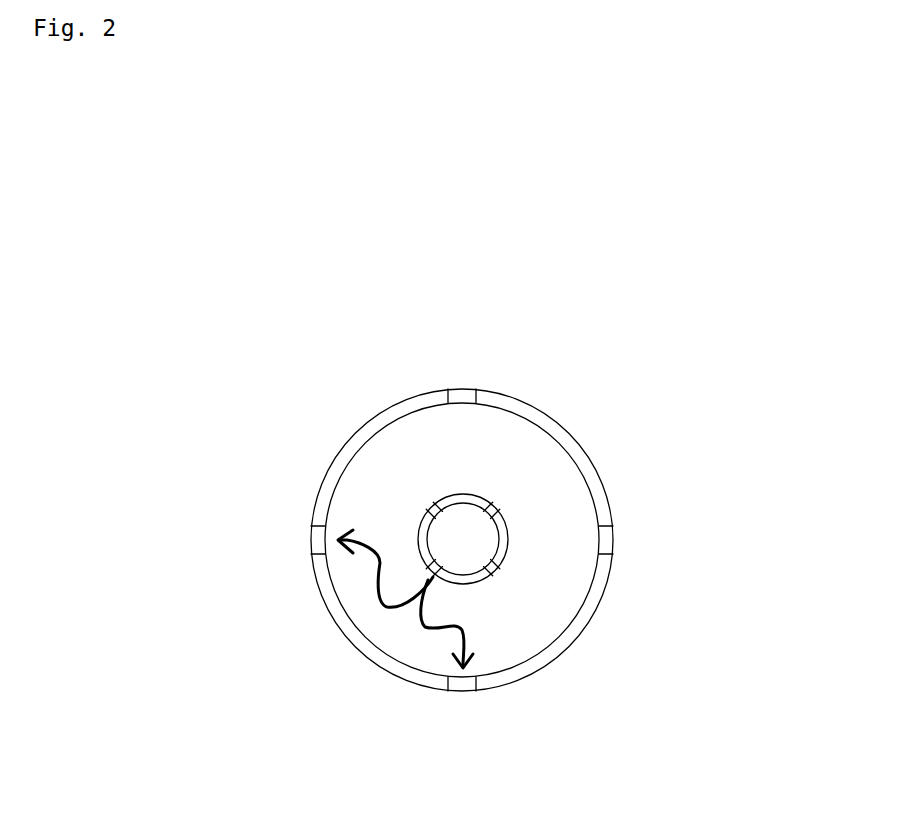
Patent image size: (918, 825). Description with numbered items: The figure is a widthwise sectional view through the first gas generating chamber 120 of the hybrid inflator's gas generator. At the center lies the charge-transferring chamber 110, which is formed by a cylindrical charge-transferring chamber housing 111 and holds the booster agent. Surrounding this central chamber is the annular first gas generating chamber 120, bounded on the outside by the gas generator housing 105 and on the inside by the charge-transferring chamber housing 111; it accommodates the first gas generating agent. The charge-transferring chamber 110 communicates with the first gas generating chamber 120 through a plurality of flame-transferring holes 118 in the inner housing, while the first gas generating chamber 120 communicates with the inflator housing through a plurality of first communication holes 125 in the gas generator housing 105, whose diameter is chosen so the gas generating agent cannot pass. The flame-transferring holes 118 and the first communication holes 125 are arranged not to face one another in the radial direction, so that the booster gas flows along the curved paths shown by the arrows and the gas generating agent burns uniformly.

The gas generator housing 105 is at (582, 444).
The charge-transferring chamber 110 is at (487, 551).
The charge-transferring chamber housing 111 is at (468, 586).
The flame-transferring holes 118 is at (428, 509).
The first gas generating chamber 120 is at (477, 476).
The first communication holes 125 is at (458, 390).